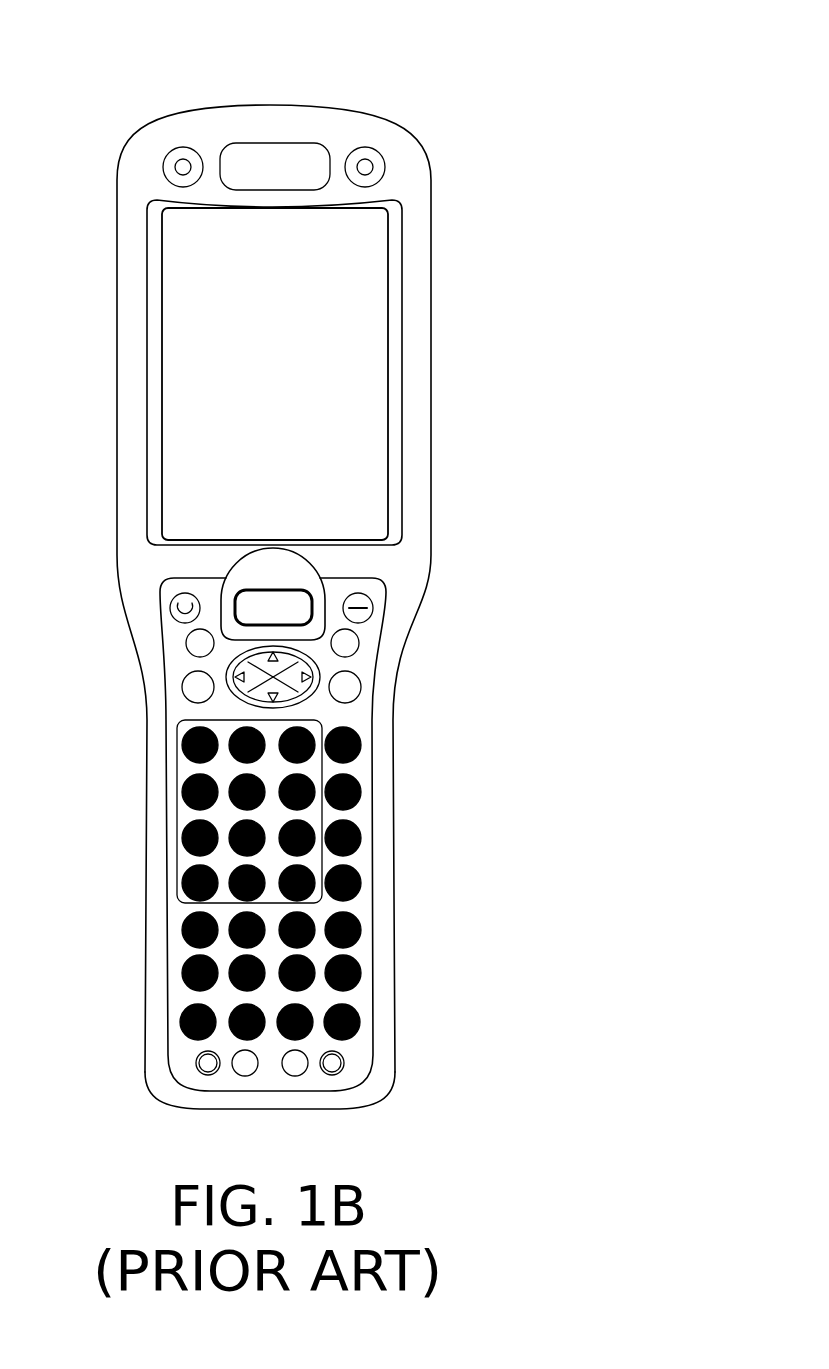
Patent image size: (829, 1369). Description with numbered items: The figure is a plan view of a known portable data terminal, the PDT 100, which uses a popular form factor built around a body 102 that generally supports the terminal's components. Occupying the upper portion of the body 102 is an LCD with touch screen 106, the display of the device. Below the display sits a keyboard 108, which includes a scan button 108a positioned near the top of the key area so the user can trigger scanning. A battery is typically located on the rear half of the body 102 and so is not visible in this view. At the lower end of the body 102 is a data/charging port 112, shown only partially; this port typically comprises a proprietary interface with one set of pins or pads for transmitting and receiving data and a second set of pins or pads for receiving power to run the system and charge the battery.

The PDT 100 is at (428, 63).
The body 102 is at (445, 313).
The LCD with touch screen 106 is at (302, 363).
The keyboard 108 is at (365, 719).
The scan button 108a is at (318, 583).
The data/charging port 112 is at (286, 1108).